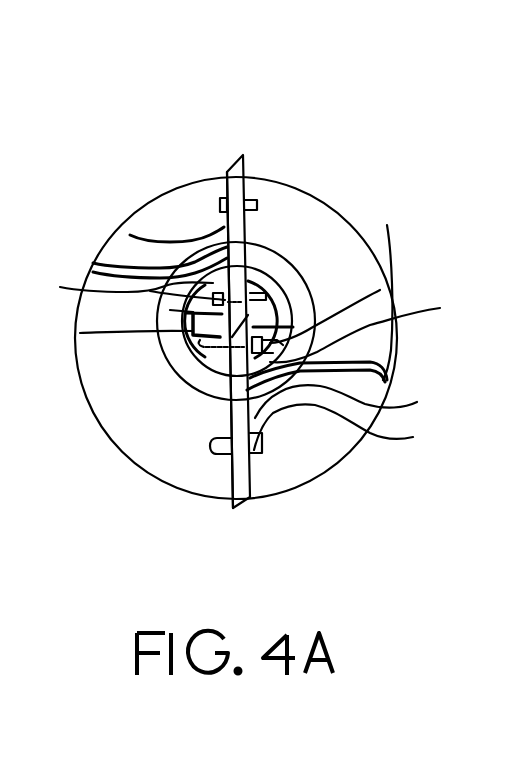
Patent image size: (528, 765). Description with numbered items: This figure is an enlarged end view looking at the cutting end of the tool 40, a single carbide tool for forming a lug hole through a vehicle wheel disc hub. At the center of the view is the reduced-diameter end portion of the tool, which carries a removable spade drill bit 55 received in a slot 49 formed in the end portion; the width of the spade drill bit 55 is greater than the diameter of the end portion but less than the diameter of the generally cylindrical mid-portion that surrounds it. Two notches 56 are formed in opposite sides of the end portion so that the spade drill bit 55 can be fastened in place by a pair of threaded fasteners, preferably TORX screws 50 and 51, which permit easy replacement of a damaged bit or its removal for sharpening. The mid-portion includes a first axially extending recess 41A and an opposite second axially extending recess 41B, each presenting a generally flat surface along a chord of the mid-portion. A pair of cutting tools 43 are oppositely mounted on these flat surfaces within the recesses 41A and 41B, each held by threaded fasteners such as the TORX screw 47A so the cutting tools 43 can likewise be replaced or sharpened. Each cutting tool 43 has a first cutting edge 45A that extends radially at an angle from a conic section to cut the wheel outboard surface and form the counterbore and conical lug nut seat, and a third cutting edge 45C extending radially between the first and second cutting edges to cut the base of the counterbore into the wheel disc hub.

The tool 40 is at (263, 146).
The cutting tool 43 is at (223, 157).
The TORX screw 47A is at (220, 208).
The third cutting edge 45C is at (130, 235).
The first cutting edge 45A is at (97, 265).
The second axially extending recess 41B is at (93, 266).
The notch 56 is at (60, 287).
The TORX screw 51 is at (170, 310).
The spade drill bit 55 is at (80, 333).
The slot 49 is at (394, 288).
The TORX screw 50 is at (380, 290).
The first axially extending recess 41A is at (388, 380).